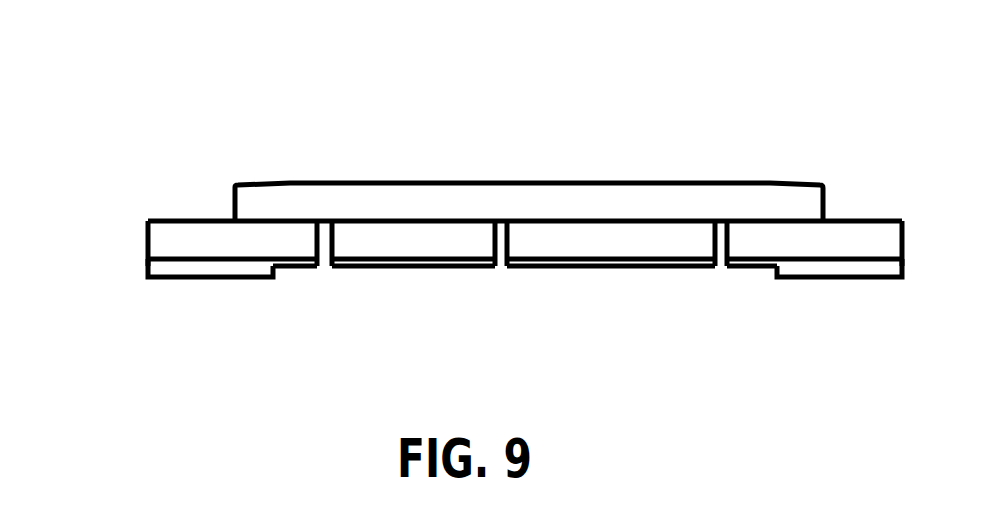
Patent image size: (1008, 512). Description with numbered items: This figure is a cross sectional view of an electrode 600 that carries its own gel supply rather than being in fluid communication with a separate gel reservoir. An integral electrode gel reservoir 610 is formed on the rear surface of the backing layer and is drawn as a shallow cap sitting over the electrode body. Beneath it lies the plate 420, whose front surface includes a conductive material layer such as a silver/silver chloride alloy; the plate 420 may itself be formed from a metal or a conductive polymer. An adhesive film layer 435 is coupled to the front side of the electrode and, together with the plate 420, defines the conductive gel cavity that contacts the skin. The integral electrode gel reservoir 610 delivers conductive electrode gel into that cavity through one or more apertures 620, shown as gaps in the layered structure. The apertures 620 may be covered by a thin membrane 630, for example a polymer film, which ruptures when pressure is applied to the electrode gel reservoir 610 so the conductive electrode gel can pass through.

The electrode 600 is at (630, 120).
The integral electrode gel reservoir 610 is at (290, 202).
The plate 420 is at (638, 268).
The adhesive film layer 435 is at (150, 272).
The apertures 620 is at (503, 253).
The thin membrane 630 is at (720, 222).